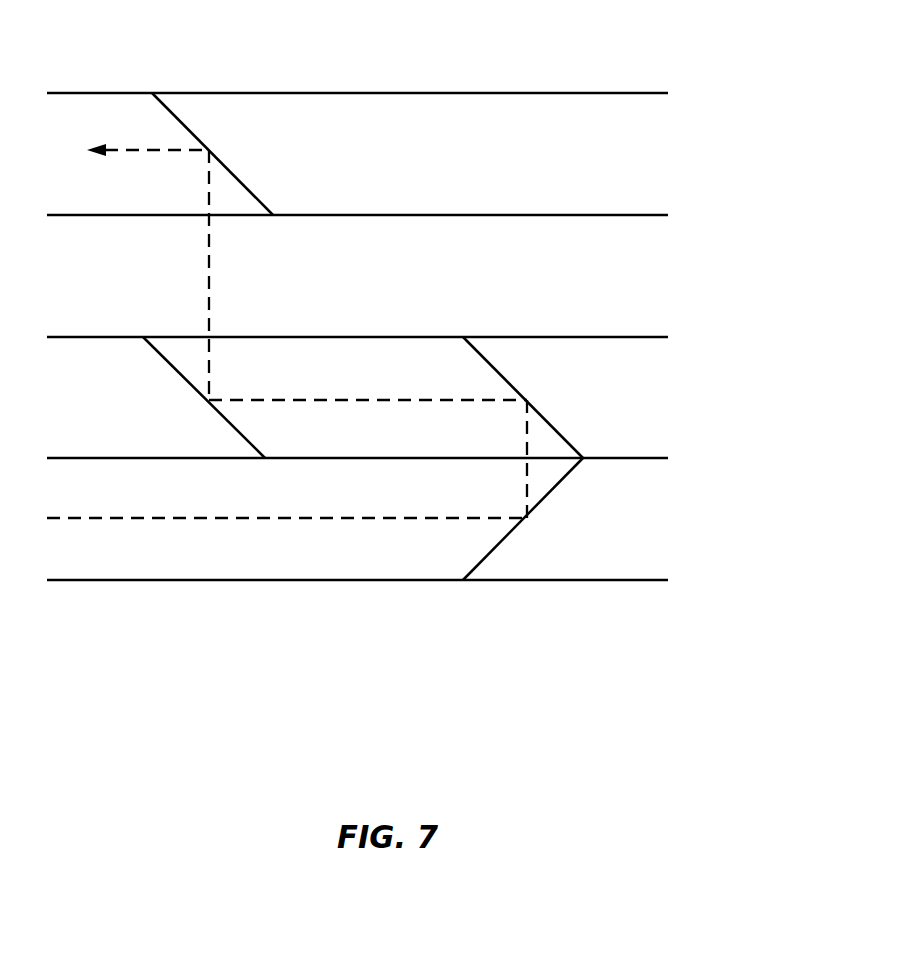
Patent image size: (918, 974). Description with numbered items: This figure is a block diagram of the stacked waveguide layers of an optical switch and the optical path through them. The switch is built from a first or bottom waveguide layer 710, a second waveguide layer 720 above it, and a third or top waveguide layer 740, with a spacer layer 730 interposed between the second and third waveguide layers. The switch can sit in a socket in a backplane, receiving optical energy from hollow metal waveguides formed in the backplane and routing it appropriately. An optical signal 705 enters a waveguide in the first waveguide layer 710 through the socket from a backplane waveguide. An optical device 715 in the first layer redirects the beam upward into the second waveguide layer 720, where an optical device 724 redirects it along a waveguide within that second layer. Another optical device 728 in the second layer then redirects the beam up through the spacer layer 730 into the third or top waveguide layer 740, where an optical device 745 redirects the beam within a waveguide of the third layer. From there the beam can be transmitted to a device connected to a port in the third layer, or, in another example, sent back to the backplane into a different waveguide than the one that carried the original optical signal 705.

The optical signal 705 is at (267, 518).
The first waveguide layer 710 is at (684, 522).
The optical device 715 is at (484, 563).
The second waveguide layer 720 is at (684, 405).
The optical device 724 is at (483, 359).
The optical device 728 is at (190, 388).
The spacer layer 730 is at (684, 277).
The third waveguide layer 740 is at (684, 151).
The optical device 745 is at (176, 117).